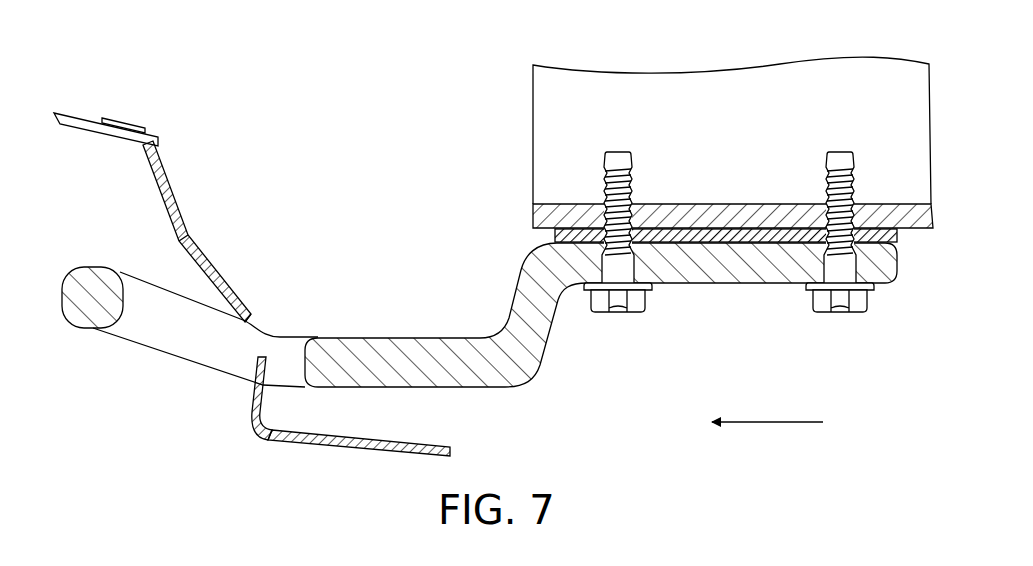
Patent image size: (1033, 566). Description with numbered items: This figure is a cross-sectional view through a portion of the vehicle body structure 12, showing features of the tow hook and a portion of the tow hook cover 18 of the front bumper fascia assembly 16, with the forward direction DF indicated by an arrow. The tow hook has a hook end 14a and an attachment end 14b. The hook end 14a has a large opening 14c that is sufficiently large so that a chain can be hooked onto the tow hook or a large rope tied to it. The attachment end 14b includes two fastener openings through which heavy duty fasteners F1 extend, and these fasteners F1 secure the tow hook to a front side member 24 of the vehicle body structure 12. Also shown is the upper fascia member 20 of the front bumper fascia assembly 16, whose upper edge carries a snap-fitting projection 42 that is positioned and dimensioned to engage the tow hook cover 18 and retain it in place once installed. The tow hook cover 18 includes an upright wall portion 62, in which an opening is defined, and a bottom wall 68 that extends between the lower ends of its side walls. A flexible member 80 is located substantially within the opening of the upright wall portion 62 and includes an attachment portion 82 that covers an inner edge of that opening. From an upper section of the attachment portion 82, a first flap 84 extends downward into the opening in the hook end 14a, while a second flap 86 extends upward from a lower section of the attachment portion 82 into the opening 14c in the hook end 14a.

The vehicle body structure 12 is at (733, 116).
The front side member 24 is at (777, 112).
The hook end 14a is at (93, 297).
The attachment end 14b is at (721, 263).
The large opening 14c is at (158, 319).
The front bumper fascia assembly 16 is at (179, 183).
The tow hook cover 18 is at (356, 421).
The upper fascia member 20 is at (88, 127).
The snap-fitting projection 42 is at (160, 141).
The upright wall portion 62 is at (168, 184).
The bottom wall 68 is at (393, 437).
The flexible member 80 is at (214, 265).
The attachment portion 82 is at (189, 234).
The first flap 84 is at (238, 300).
The second flap 86 is at (264, 371).
The fasteners F1 is at (612, 314).
The forward direction DF is at (768, 421).